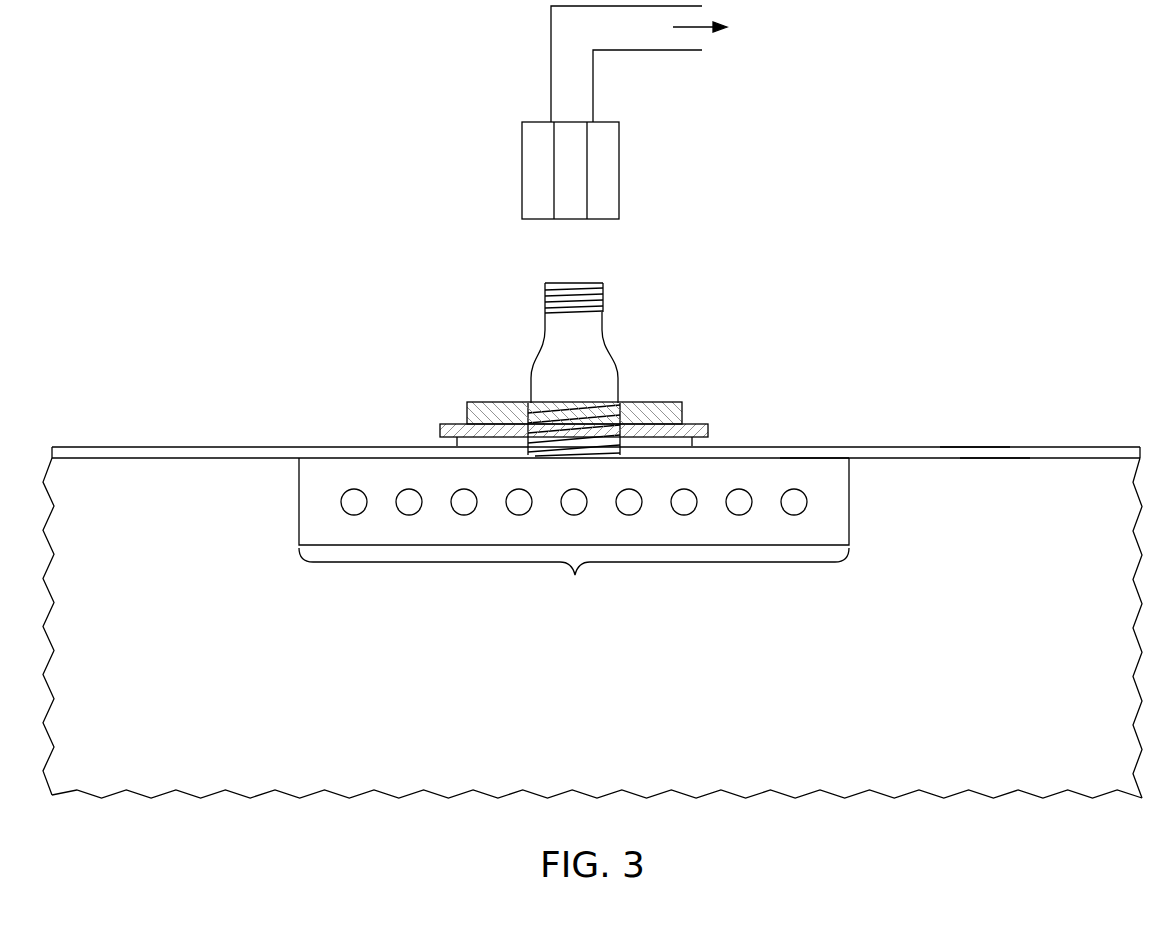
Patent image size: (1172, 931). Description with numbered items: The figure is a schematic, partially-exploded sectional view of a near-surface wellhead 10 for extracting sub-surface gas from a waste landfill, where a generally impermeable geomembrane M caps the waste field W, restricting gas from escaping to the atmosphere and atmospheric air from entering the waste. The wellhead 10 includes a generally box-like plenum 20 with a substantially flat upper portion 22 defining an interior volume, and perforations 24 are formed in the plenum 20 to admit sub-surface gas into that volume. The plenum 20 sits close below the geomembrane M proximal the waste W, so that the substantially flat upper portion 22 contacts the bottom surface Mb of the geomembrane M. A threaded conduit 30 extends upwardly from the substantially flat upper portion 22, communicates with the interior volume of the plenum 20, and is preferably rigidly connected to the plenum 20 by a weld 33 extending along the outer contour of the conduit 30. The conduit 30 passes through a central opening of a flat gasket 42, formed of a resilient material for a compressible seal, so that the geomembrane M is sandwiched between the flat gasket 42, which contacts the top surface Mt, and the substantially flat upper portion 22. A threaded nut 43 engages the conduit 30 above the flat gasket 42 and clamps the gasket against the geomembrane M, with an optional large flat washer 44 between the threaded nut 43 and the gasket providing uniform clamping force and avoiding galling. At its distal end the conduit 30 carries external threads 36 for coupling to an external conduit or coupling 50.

The wellhead 10 is at (415, 307).
The plenum 20 is at (599, 533).
The substantially flat upper portion 22 is at (803, 458).
The perforations 24 is at (805, 500).
The threaded conduit 30 is at (617, 381).
The weld 33 is at (531, 451).
The external threads 36 is at (606, 292).
The flat gasket 42 is at (708, 438).
The threaded nut 43 is at (682, 412).
The large flat washer 44 is at (440, 432).
The external conduit or coupling 50 is at (503, 113).
The geomembrane M is at (1062, 449).
The top surface of the geomembrane Mt is at (972, 447).
The bottom surface of the geomembrane Mb is at (986, 459).
The waste field W is at (584, 671).